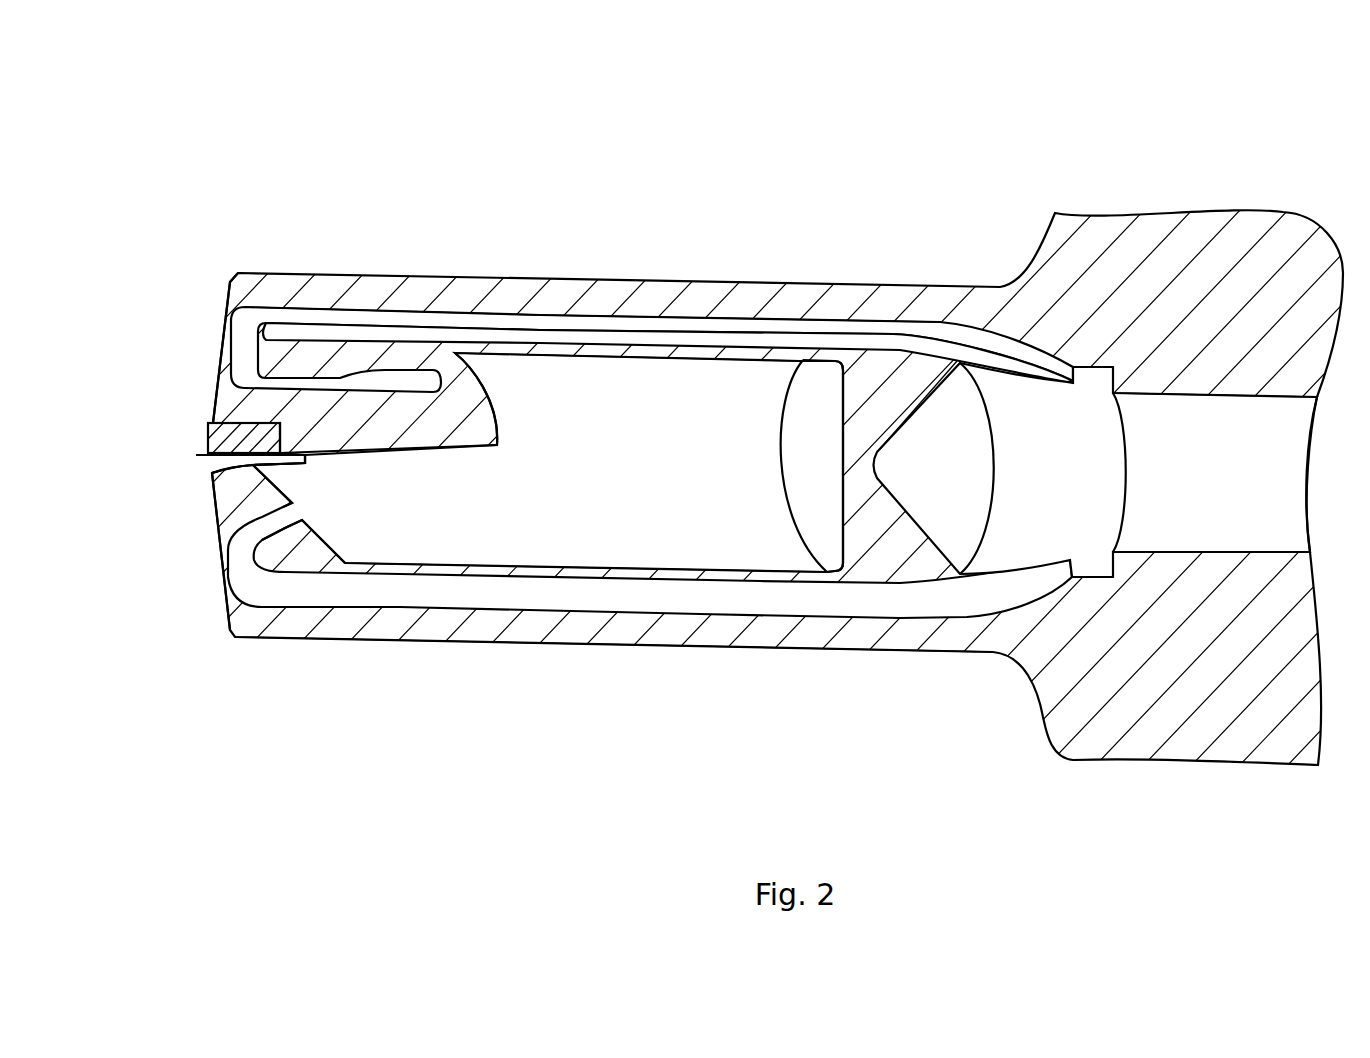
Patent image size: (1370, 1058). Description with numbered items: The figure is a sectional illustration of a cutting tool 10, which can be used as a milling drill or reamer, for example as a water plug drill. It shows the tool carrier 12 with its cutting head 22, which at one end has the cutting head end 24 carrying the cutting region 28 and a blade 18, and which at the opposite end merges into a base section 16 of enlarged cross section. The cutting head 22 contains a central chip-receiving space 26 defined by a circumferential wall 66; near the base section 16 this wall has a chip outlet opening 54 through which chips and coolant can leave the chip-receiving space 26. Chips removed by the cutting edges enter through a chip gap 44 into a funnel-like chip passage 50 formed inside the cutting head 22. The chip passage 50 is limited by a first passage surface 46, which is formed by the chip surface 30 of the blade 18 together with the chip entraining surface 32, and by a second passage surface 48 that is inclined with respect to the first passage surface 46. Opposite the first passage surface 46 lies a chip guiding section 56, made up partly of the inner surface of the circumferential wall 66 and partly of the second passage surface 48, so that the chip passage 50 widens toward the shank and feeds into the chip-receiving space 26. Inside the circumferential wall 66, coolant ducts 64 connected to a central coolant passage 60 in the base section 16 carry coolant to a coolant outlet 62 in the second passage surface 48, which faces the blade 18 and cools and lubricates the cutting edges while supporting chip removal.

The cutting tool 10 is at (990, 198).
The tool carrier 12 is at (508, 230).
The base section 16 is at (1139, 742).
The blade 18 is at (205, 440).
The cutting head 22 is at (524, 700).
The cutting head end 24 is at (188, 330).
The chip-receiving space 26 is at (664, 478).
The cutting region 28 is at (180, 324).
The chip surface 30 is at (200, 457).
The chip entraining surface 32 is at (463, 452).
The chip gap 44 is at (212, 473).
The first passage surface 46 is at (363, 453).
The second passage surface 48 is at (331, 538).
The chip passage 50 is at (327, 513).
The chip outlet opening 54 is at (823, 473).
The chip guiding section 56 is at (385, 551).
The central coolant passage 60 is at (1147, 452).
The coolant outlet 62 is at (222, 580).
The coolant duct 64 is at (600, 322).
The circumferential wall 66 is at (752, 300).